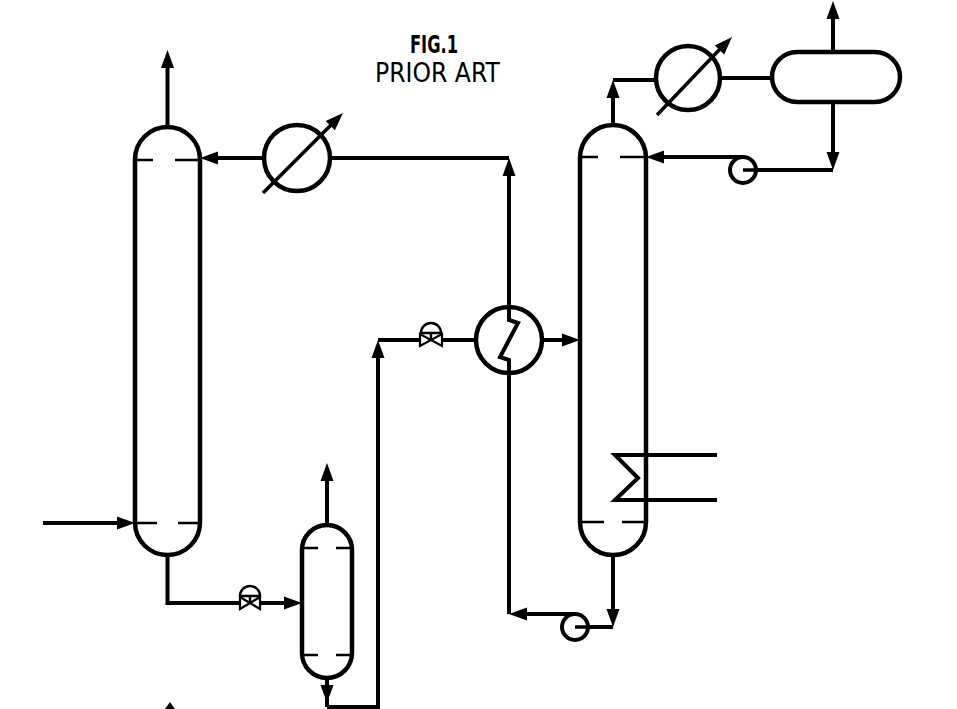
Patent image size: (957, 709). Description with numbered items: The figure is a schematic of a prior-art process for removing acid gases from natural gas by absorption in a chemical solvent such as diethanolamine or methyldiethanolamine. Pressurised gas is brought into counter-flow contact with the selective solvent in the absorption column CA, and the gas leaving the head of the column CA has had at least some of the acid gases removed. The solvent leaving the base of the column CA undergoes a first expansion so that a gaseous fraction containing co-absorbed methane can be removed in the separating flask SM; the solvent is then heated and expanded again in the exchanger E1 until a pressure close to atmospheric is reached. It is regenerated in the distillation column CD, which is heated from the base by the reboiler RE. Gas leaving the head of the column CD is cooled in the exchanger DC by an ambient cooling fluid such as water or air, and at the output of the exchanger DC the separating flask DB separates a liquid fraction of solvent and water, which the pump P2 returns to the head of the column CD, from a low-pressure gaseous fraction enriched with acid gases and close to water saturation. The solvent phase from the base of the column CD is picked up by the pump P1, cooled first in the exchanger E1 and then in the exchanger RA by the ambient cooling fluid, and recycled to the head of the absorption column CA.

The absorption column CA is at (178, 331).
The exchanger RA is at (303, 143).
The exchanger E1 is at (509, 325).
The distillation column CD is at (627, 322).
The reboiler RE is at (666, 463).
The exchanger DC is at (694, 64).
The separating flask DB is at (843, 88).
The pump P2 is at (743, 185).
The separating flask SM is at (343, 610).
The pump P1 is at (574, 645).